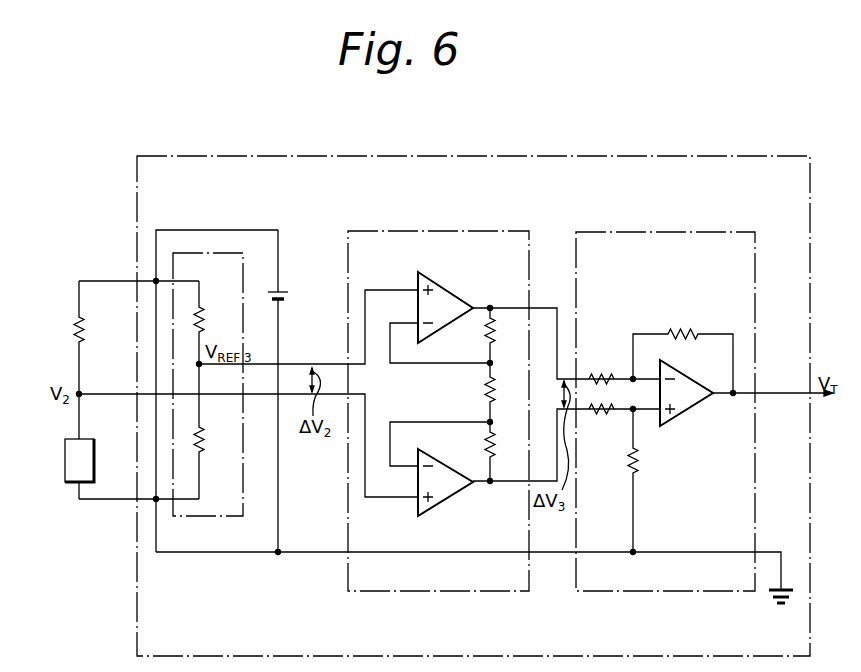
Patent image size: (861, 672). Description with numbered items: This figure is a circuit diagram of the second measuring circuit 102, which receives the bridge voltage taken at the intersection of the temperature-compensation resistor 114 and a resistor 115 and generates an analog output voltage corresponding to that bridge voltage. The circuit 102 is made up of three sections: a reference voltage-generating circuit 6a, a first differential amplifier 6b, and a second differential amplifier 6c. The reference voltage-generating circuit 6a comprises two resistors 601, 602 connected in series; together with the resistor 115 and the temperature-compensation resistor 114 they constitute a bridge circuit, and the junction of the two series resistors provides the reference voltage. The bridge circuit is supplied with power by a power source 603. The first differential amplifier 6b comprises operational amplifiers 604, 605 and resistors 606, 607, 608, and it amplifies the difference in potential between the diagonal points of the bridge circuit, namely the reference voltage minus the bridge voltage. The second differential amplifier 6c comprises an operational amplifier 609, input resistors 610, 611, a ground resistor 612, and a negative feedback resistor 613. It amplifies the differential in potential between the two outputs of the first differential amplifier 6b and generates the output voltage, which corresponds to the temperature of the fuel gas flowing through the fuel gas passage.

The measuring circuit 102 is at (452, 156).
The reference voltage-generating circuit 6a is at (220, 253).
The first differential amplifier 6b is at (420, 231).
The second differential amplifier 6c is at (655, 232).
The temperature-compensation resistor 114 is at (65, 465).
The resistor 115 is at (79, 330).
The resistor 601 is at (205, 326).
The resistor 602 is at (215, 445).
The power source 603 is at (284, 292).
The operational amplifier 604 is at (450, 296).
The operational amplifier 605 is at (452, 500).
The resistor 606 is at (495, 335).
The resistor 607 is at (495, 398).
The resistor 608 is at (495, 454).
The operational amplifier 609 is at (700, 408).
The input resistor 610 is at (601, 379).
The input resistor 611 is at (600, 412).
The ground resistor 612 is at (640, 468).
The negative feedback resistor 613 is at (684, 334).